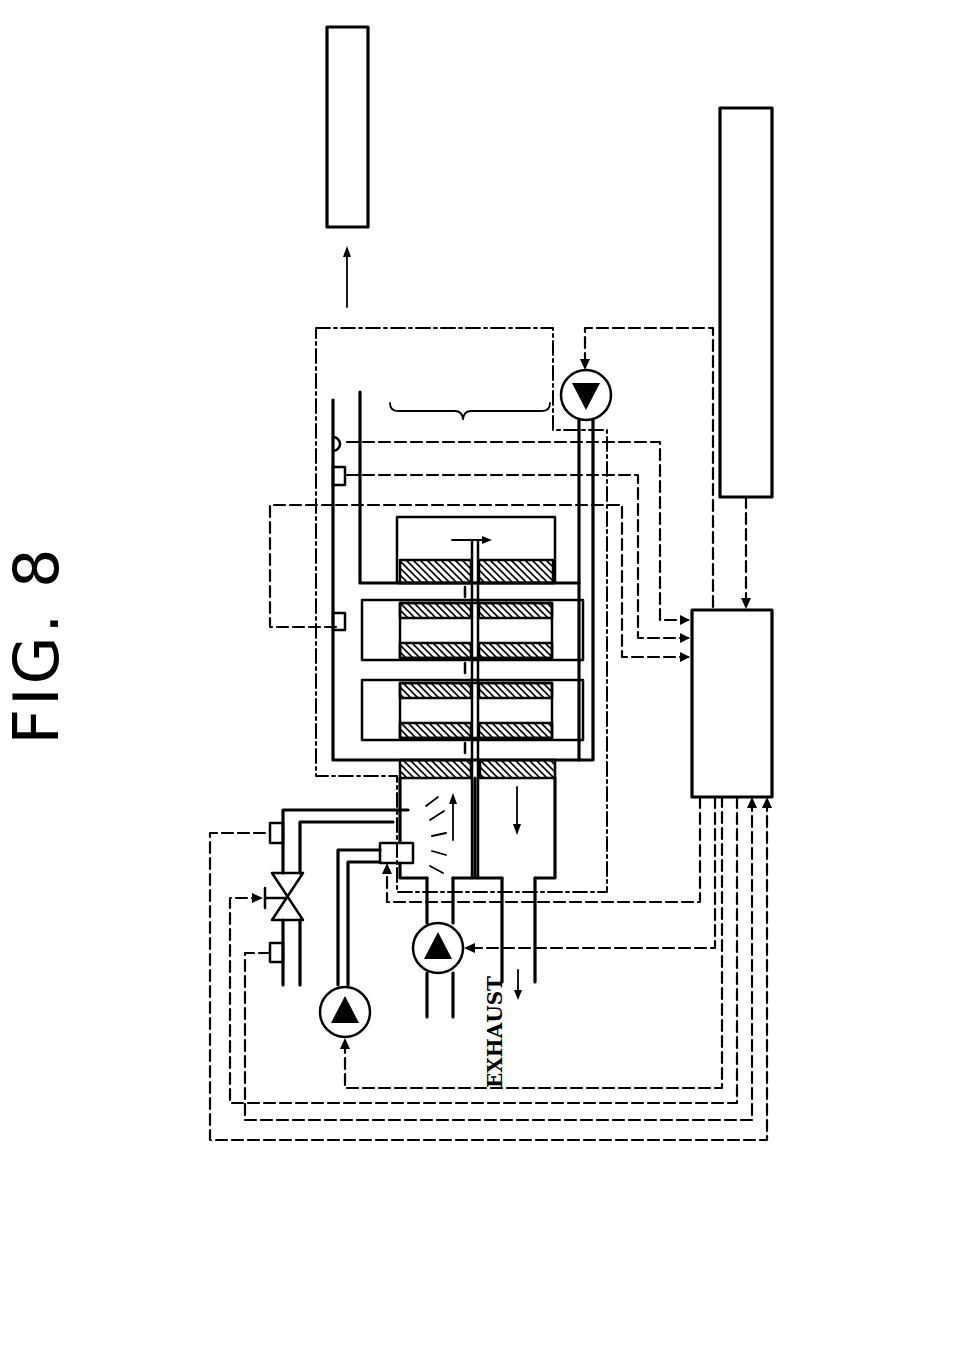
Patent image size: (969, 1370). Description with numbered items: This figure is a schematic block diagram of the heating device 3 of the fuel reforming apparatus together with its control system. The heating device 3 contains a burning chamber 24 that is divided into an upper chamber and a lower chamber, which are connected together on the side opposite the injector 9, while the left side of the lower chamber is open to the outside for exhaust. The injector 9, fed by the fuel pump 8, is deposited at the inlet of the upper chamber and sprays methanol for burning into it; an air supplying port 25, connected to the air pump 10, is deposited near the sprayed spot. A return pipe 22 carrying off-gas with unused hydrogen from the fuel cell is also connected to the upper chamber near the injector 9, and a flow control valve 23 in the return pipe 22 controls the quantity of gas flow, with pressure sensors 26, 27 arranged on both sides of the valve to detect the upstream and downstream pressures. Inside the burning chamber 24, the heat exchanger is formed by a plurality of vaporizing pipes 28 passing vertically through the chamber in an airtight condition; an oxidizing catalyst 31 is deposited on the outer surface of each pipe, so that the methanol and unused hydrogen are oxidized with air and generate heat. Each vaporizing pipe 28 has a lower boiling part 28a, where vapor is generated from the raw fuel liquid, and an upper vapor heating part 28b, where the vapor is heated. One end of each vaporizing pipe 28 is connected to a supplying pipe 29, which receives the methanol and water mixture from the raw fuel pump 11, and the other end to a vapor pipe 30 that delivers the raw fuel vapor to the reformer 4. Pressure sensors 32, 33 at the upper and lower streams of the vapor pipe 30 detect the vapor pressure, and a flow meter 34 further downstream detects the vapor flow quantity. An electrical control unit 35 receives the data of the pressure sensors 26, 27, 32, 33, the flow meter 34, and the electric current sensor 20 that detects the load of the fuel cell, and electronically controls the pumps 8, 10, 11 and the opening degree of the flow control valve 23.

The heating device 3 is at (316, 334).
The reformer 4 is at (325, 152).
The fuel pump 8 is at (341, 1038).
The injector 9 is at (380, 850).
The air pump 10 is at (427, 970).
The raw fuel pump 11 is at (610, 392).
The electric current sensor 20 is at (720, 135).
The return pipe 22 is at (300, 810).
The flow control valve 23 is at (303, 895).
The burning chamber 24 is at (397, 797).
The air supplying port 25 is at (430, 878).
The pressure sensor 26 is at (278, 965).
The pressure sensor 27 is at (272, 824).
The vaporizing pipe 28 is at (377, 565).
The boiling part 28a is at (506, 373).
The vapor heating part 28b is at (426, 373).
The supplying pipe 29 is at (595, 675).
The vapor pipe 30 is at (333, 542).
The oxidizing catalyst 31 is at (405, 648).
The pressure sensor 32 is at (333, 622).
The pressure sensor 33 is at (333, 477).
The flow meter 34 is at (330, 442).
The electrical control unit (ECU) 35 is at (692, 782).